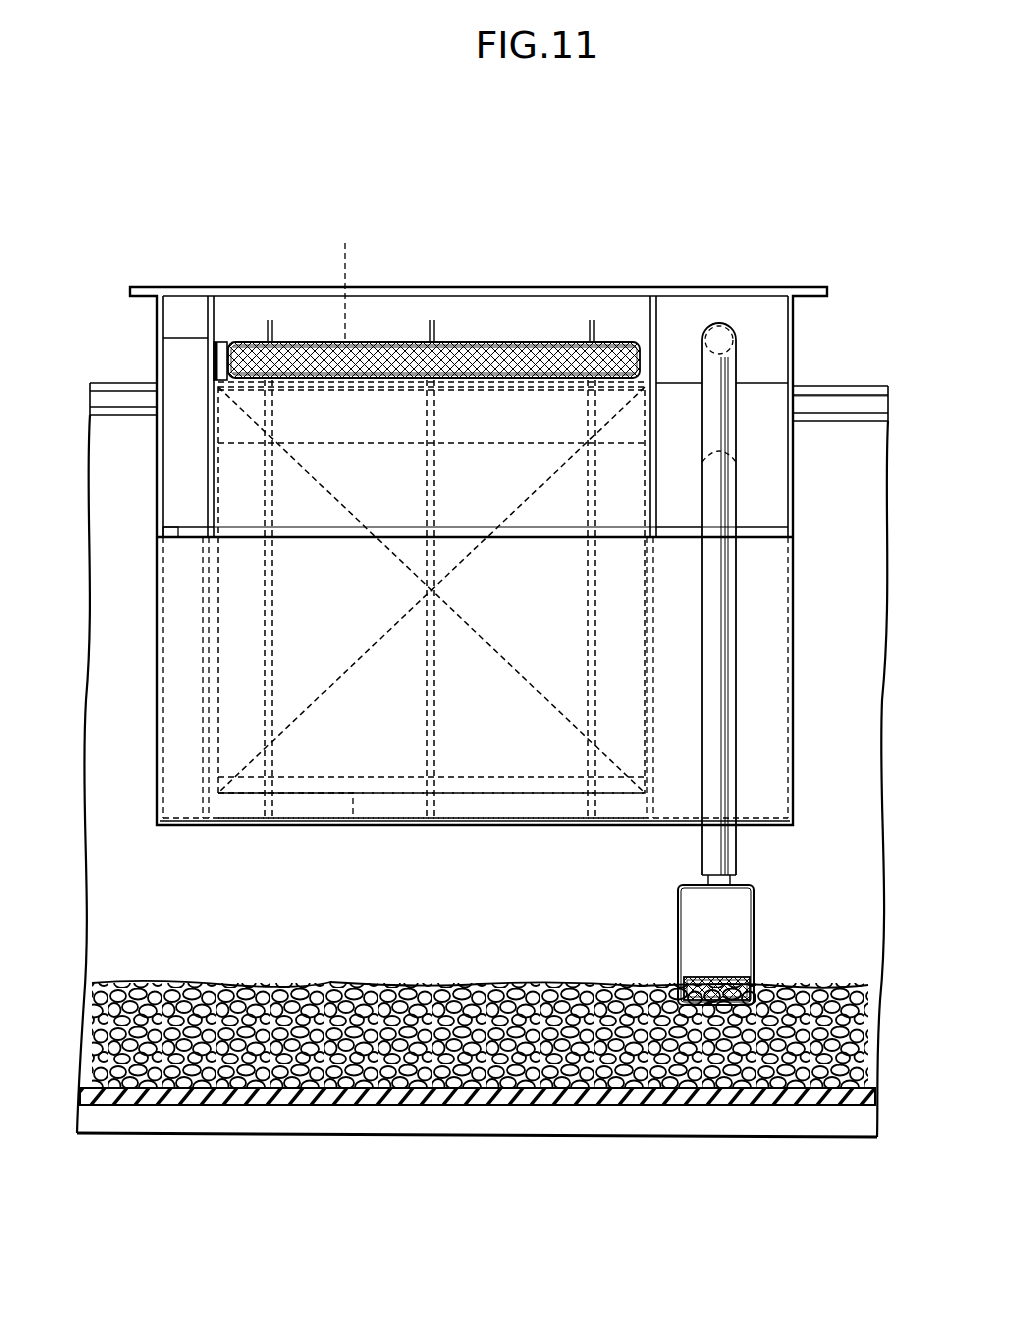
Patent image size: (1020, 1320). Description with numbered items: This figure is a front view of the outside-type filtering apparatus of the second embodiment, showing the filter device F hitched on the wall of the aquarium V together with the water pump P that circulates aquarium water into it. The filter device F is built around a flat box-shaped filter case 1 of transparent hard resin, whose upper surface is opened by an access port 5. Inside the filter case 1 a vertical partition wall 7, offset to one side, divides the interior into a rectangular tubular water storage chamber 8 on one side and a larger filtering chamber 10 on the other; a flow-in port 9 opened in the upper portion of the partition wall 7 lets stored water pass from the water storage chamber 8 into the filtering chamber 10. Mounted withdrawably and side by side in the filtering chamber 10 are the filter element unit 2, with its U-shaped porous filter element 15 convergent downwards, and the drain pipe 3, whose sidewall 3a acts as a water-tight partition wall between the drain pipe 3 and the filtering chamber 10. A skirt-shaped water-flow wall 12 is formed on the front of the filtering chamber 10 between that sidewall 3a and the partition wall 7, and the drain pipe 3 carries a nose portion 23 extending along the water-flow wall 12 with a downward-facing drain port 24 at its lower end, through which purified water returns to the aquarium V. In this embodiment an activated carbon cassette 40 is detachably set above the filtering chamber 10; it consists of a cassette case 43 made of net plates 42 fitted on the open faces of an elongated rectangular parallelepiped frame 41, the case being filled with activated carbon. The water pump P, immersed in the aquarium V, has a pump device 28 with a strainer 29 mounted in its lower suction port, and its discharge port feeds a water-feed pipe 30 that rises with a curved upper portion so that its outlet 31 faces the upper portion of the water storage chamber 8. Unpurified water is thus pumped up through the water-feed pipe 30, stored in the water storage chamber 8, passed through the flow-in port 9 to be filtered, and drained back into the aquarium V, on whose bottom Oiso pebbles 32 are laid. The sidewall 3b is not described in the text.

The filter case 1 is at (797, 447).
The filter element unit 2 is at (471, 802).
The drain pipe 3 is at (165, 433).
The sidewall (partition wall) 3a is at (226, 332).
The chamber outer wall 3b is at (182, 337).
The access port 5 is at (549, 336).
The partition wall 7 is at (653, 460).
The water storage chamber 8 is at (690, 366).
The flow-in port 9 is at (655, 325).
The filtering chamber 10 is at (431, 278).
The water-flow wall 12 is at (414, 485).
The filter element 15 is at (353, 793).
The nose portion 23 is at (180, 480).
The drain port 24 is at (178, 540).
The pump device 28 is at (688, 908).
The strainer 29 is at (688, 992).
The water-feed pipe 30 is at (717, 720).
The outlet 31 is at (719, 328).
The Oiso pebbles 32 is at (387, 993).
The activated carbon cassette 40 is at (313, 336).
The frame 41 is at (416, 342).
The net plates 42 is at (370, 342).
The cassette case 43 is at (434, 227).
The filter device F is at (800, 338).
The aquarium V is at (838, 382).
The water pump P is at (719, 929).